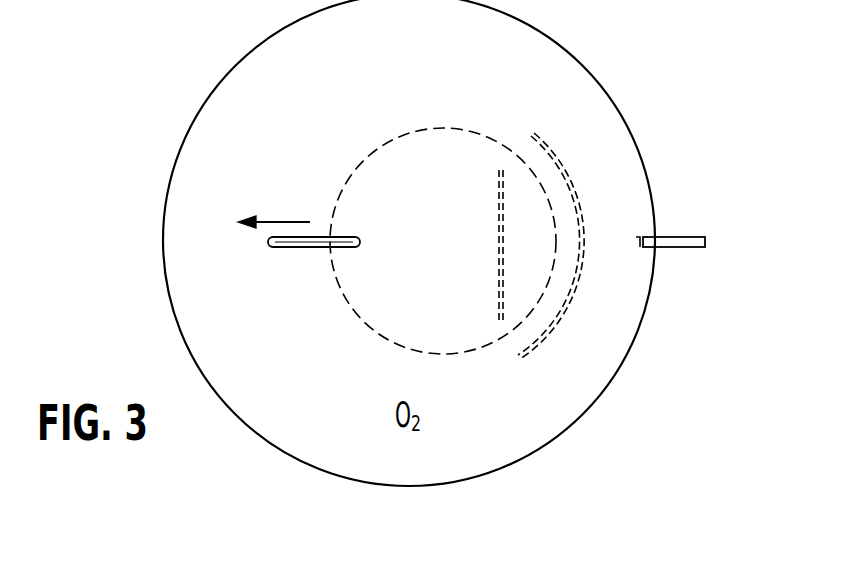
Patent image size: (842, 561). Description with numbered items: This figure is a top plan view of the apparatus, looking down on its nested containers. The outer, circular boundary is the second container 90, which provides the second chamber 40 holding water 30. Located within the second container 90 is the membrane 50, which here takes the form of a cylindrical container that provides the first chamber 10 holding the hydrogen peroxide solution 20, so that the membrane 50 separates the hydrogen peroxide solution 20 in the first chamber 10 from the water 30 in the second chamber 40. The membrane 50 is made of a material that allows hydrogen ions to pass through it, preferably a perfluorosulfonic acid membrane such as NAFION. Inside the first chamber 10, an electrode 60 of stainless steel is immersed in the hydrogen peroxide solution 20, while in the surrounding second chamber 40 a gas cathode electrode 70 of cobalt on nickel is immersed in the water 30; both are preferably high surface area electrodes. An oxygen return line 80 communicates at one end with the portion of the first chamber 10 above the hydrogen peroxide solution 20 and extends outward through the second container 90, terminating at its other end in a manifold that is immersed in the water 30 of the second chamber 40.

The first chamber 10 is at (458, 317).
The hydrogen peroxide solution 20 is at (466, 184).
The water 30 is at (236, 132).
The second chamber 40 is at (416, 82).
The membrane 50 is at (453, 128).
The electrode 60 is at (503, 273).
The gas cathode electrode 70 is at (572, 172).
The oxygen return line 80 is at (300, 246).
The second container 90 is at (647, 173).